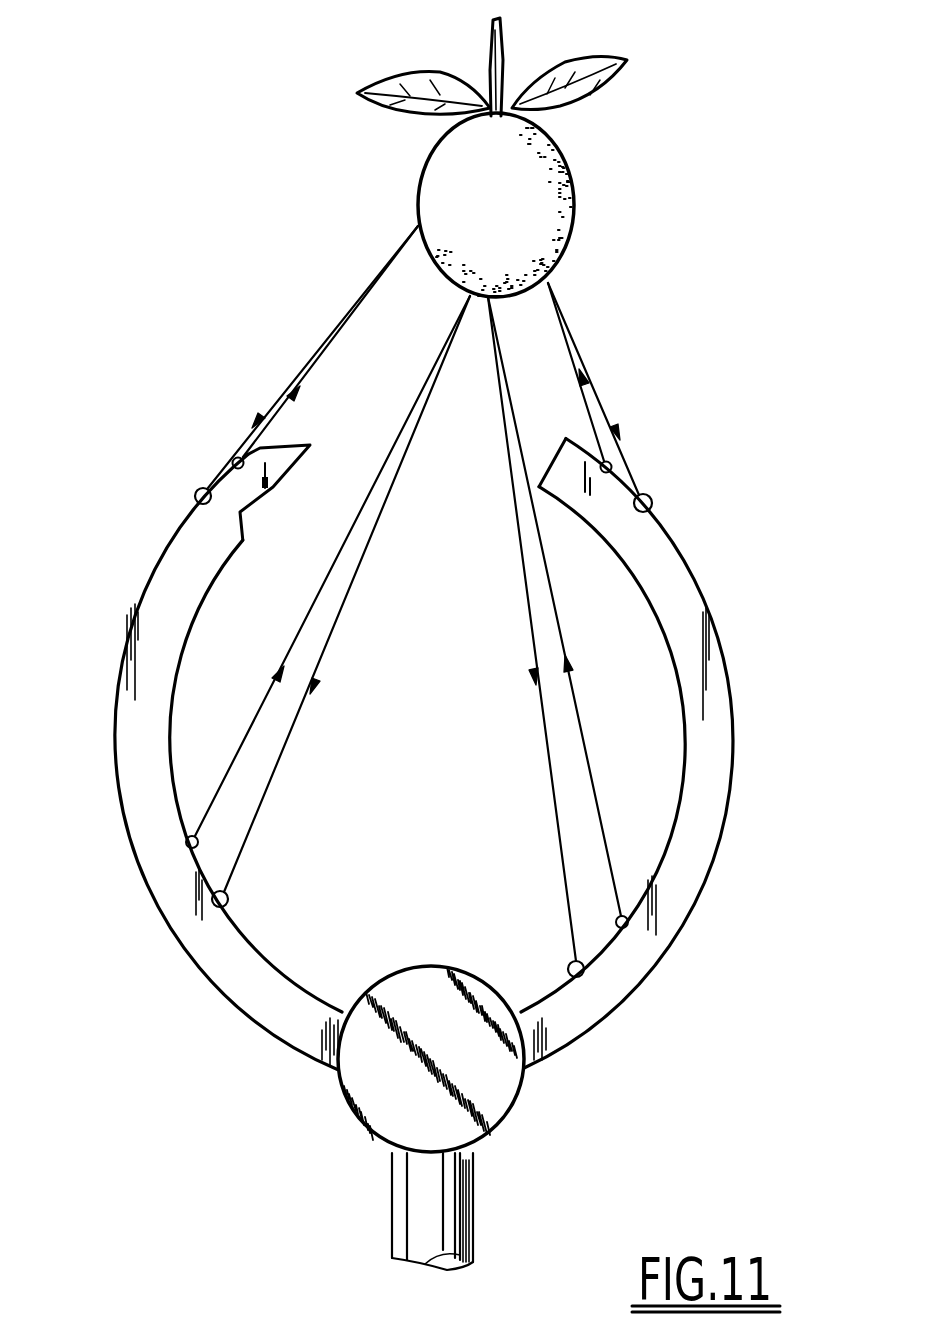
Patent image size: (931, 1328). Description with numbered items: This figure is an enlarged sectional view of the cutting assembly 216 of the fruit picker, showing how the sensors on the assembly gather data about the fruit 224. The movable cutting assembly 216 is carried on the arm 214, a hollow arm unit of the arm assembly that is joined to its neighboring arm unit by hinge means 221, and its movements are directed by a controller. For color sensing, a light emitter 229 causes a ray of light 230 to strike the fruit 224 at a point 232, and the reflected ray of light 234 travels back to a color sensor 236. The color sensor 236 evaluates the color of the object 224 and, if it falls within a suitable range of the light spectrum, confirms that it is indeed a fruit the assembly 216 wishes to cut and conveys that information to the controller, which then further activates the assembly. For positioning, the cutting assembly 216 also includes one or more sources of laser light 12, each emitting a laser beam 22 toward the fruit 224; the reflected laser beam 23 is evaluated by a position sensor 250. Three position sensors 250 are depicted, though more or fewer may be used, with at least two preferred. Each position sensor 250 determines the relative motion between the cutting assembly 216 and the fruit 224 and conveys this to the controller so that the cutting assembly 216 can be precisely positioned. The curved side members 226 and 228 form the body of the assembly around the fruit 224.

The cutting assembly 216 is at (135, 411).
The fruit 224 is at (512, 190).
The point 232 is at (493, 300).
The laser beam 22 is at (285, 408).
The reflected laser beam 23 is at (272, 397).
The source of laser light 12 is at (233, 459).
The position sensor 250 is at (194, 494).
The left arm 226 is at (150, 886).
The right arm 228 is at (702, 888).
The ray of light 234 is at (532, 641).
The ray of light 230 is at (563, 641).
The light emitter 229 is at (619, 915).
The color sensor 236 is at (568, 964).
The hinge means 221 is at (375, 1087).
The arm 214 is at (427, 1187).